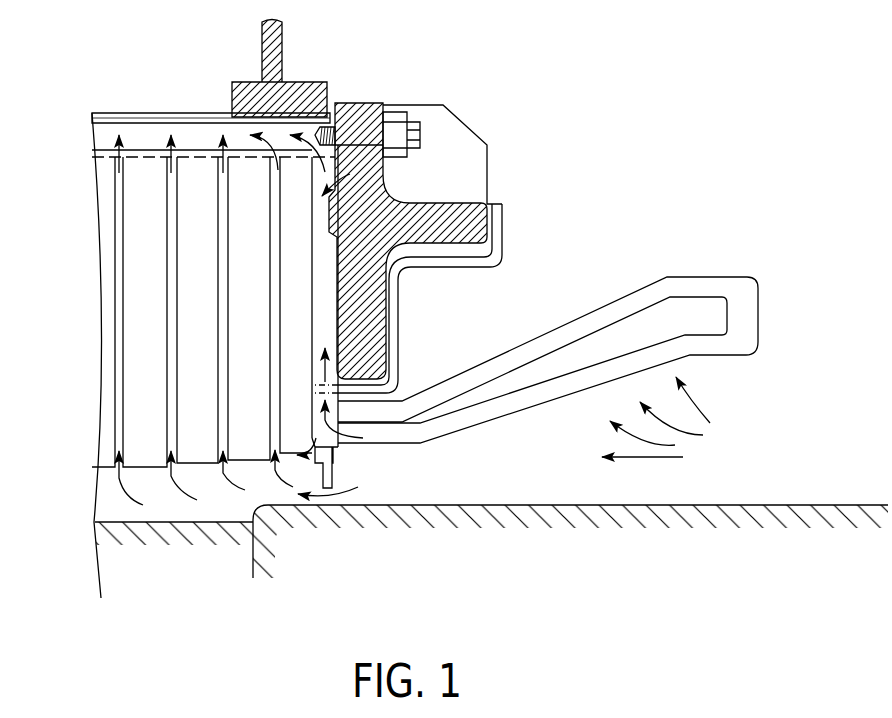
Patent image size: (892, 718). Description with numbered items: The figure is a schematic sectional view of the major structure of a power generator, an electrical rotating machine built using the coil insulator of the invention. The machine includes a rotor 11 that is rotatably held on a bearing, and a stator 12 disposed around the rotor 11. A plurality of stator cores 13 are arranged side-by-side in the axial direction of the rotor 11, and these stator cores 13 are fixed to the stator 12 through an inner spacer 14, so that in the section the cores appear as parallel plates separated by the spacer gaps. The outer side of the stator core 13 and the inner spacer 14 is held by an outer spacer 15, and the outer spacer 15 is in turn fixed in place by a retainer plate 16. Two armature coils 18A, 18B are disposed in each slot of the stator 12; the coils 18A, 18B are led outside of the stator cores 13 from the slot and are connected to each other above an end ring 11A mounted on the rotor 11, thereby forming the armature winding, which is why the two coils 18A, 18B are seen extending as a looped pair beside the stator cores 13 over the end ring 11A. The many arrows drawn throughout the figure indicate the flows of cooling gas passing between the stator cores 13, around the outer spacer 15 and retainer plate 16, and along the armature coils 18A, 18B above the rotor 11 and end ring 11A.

The rotor 11 is at (150, 568).
The end ring 11A is at (388, 568).
The stator 12 is at (100, 97).
The stator cores 13 is at (200, 231).
The inner spacer 14 is at (216, 318).
The outer spacer 15 is at (350, 176).
The retainer plate 16 is at (442, 103).
The armature coil 18A is at (502, 358).
The armature coil 18B is at (503, 411).